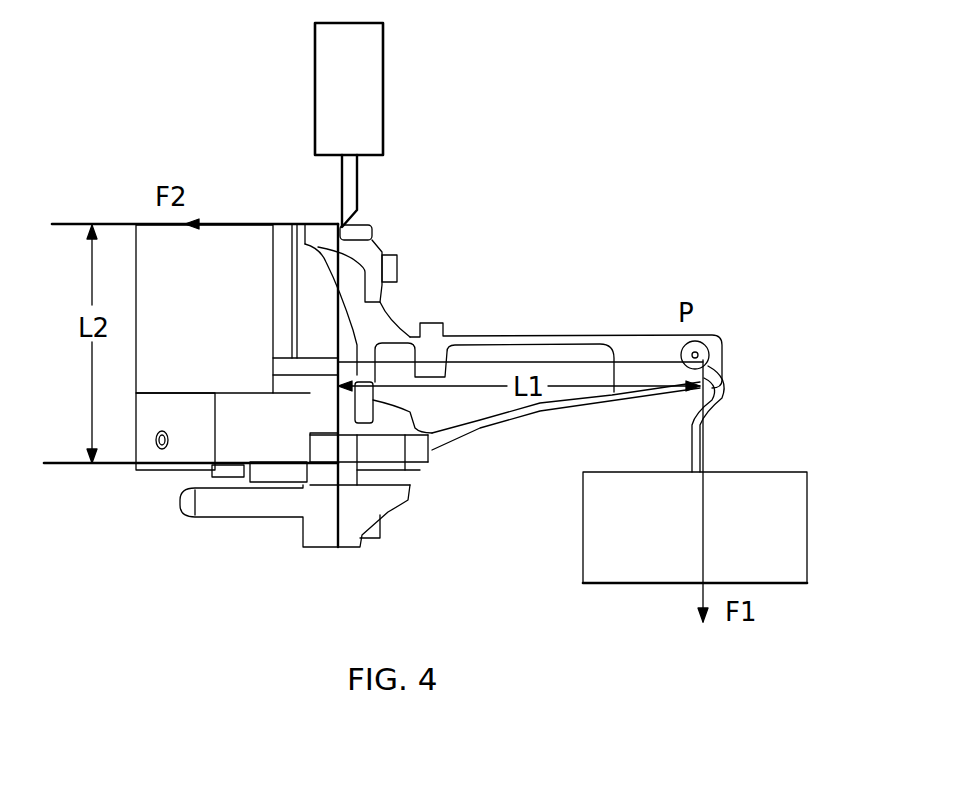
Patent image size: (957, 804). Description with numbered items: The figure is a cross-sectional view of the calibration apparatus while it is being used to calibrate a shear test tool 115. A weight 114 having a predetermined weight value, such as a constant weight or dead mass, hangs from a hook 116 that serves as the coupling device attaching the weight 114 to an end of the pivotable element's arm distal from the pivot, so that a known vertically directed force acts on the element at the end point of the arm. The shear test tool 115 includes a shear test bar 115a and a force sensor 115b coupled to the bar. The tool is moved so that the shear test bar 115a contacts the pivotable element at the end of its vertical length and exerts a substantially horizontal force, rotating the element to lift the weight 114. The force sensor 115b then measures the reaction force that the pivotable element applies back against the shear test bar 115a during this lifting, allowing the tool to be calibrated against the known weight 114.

The weight 114 is at (788, 538).
The shear test tool 115 is at (486, 125).
The shear test bar 115a is at (357, 183).
The force sensor 115b is at (385, 98).
The hook 116 is at (730, 387).